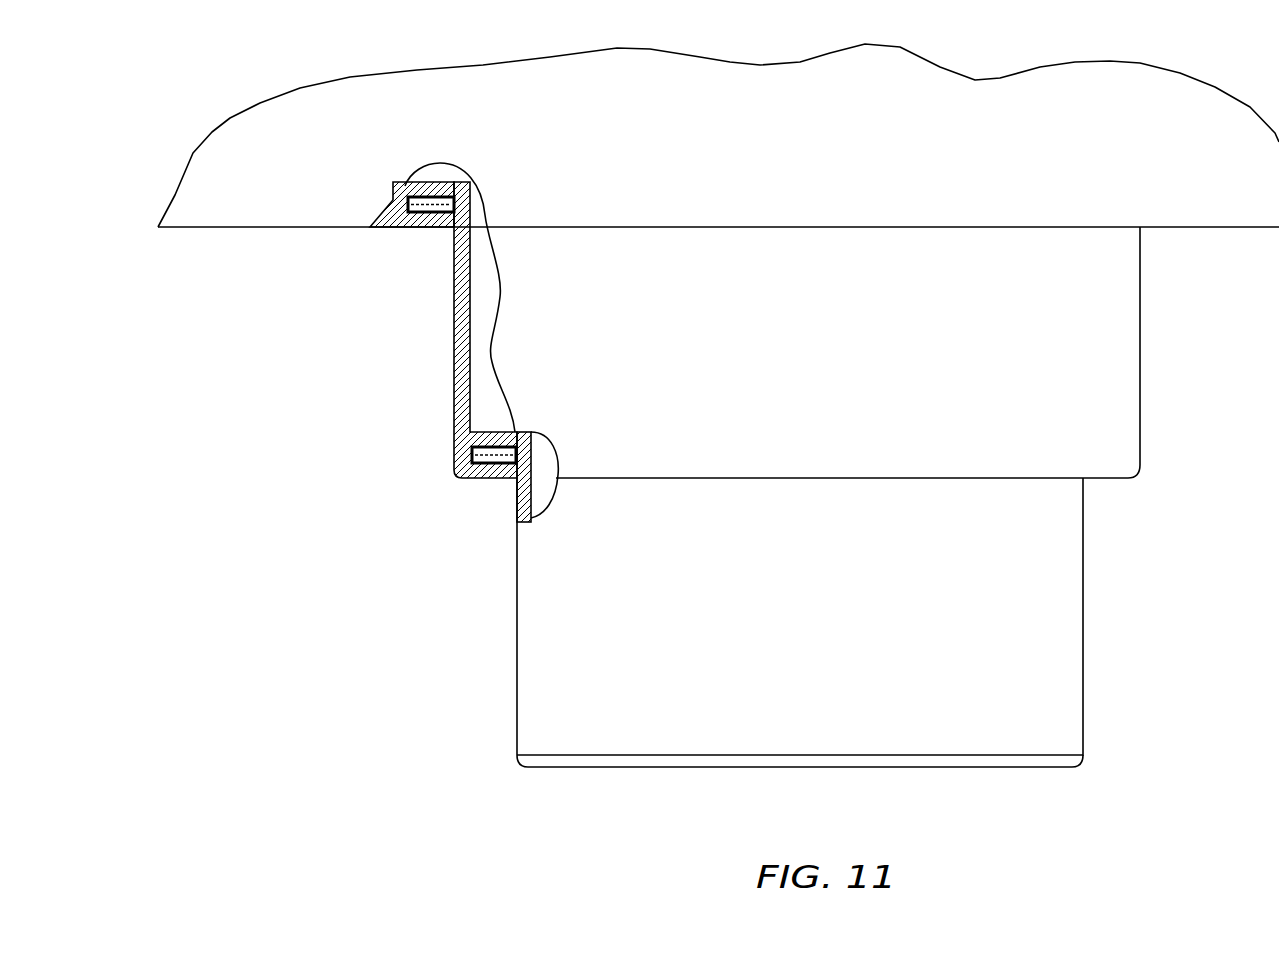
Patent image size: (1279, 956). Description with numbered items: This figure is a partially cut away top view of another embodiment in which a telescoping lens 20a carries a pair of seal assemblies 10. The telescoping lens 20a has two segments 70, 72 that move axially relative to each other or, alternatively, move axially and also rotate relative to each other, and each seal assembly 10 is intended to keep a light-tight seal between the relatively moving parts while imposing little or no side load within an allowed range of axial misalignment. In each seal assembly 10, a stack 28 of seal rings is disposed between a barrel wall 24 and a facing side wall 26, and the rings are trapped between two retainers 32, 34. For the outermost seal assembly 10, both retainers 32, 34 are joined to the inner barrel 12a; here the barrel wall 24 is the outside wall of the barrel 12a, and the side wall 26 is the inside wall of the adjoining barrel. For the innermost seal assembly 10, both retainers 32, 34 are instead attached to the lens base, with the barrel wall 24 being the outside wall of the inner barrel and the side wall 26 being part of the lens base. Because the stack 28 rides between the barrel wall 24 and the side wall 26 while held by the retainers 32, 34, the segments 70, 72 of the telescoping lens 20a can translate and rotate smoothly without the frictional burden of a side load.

The seal assembly 10 is at (483, 433).
The inner barrel 12a is at (453, 365).
The telescoping lens 20a is at (970, 768).
The barrel wall 24 is at (453, 416).
The side wall 26 is at (408, 202).
The stack of seal rings 28 is at (466, 203).
The base retainer 32 is at (431, 200).
The retainer 34 is at (432, 228).
The segment 70 is at (1083, 600).
The segment 72 is at (1140, 300).